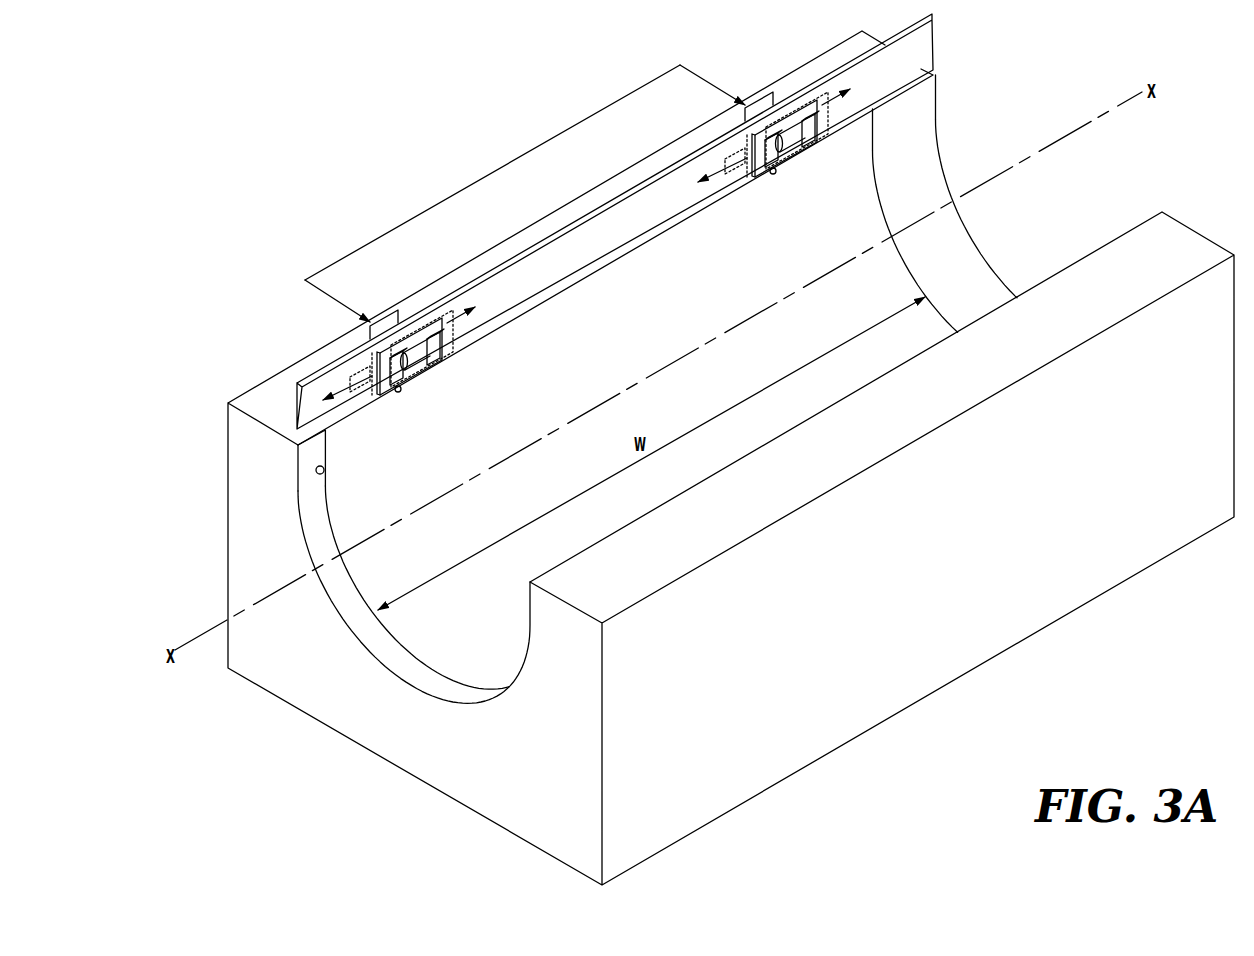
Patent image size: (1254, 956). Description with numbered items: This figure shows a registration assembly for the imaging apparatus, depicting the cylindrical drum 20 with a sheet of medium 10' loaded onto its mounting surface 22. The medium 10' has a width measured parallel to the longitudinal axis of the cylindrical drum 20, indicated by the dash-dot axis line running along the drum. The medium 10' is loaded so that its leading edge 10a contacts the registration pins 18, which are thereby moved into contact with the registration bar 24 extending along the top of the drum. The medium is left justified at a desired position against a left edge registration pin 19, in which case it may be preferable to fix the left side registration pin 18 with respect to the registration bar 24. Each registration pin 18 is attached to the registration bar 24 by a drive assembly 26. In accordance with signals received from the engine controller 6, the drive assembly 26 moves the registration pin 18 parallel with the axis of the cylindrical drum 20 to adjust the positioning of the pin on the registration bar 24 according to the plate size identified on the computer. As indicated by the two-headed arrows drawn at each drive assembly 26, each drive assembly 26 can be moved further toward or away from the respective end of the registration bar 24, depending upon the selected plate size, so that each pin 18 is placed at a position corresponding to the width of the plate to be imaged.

The engine controller 6 is at (487, 177).
The leading edge of the medium 10a is at (333, 421).
The sheet of medium 10' is at (910, 220).
The registration pin 18 is at (389, 388).
The left edge registration pin 19 is at (325, 473).
The cylindrical drum 20 is at (966, 580).
The mounting surface 22 is at (968, 292).
The registration bar 24 is at (923, 40).
The drive assembly 26 is at (793, 151).